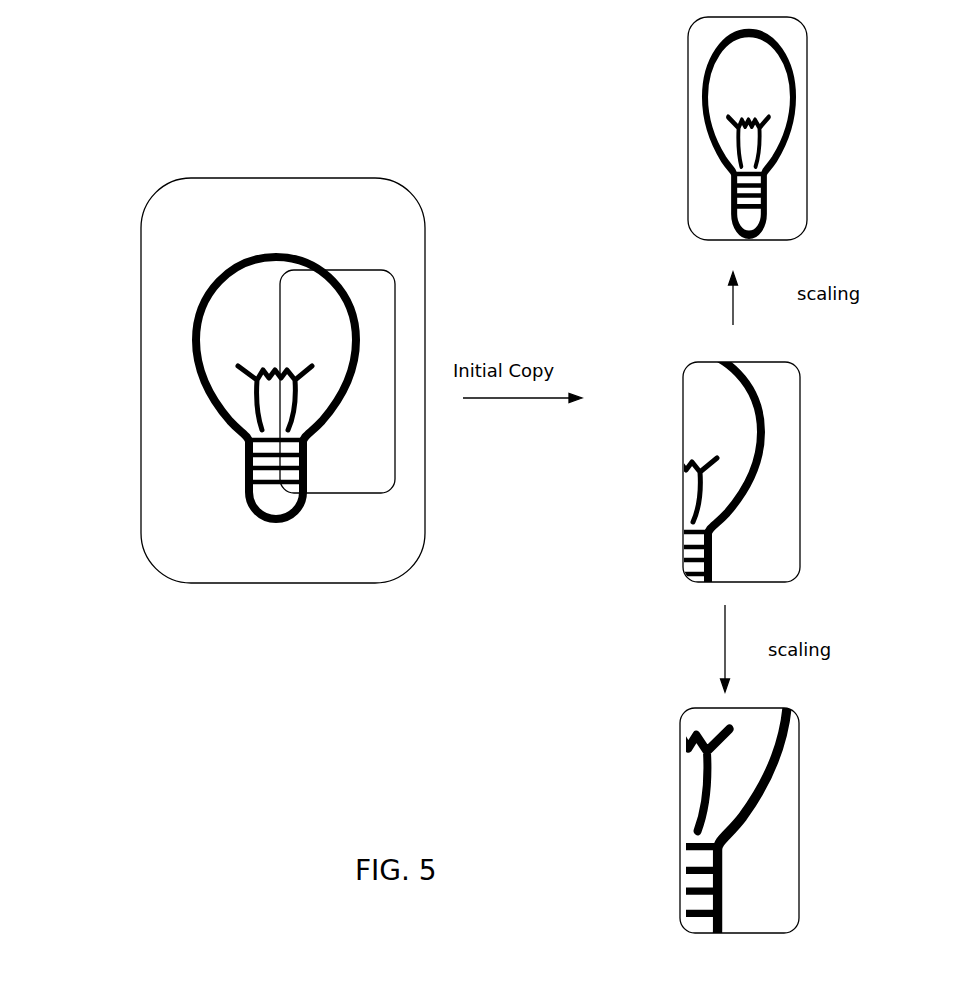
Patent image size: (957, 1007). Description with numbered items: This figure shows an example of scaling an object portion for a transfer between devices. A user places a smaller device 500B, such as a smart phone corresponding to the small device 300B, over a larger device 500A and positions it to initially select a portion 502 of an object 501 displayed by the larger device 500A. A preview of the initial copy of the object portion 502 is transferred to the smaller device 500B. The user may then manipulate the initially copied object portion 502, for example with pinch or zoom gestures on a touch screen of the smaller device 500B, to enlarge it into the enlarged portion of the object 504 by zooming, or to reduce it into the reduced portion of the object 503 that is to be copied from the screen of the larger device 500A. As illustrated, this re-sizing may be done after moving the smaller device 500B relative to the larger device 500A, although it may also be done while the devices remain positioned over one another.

The larger device 500A is at (114, 388).
The smaller device 500B is at (844, 116).
The object 501 is at (235, 293).
The portion of object 502 is at (303, 287).
The reduced portion of object 503 is at (688, 755).
The enlarged portion of object 504 is at (722, 98).
The small device 300B is at (348, 251).